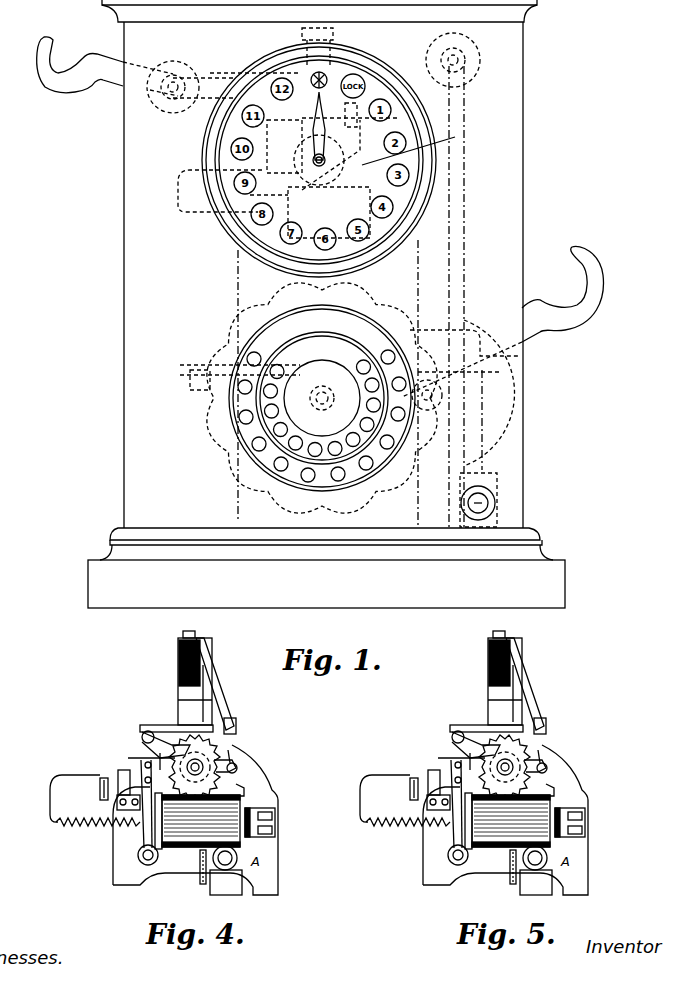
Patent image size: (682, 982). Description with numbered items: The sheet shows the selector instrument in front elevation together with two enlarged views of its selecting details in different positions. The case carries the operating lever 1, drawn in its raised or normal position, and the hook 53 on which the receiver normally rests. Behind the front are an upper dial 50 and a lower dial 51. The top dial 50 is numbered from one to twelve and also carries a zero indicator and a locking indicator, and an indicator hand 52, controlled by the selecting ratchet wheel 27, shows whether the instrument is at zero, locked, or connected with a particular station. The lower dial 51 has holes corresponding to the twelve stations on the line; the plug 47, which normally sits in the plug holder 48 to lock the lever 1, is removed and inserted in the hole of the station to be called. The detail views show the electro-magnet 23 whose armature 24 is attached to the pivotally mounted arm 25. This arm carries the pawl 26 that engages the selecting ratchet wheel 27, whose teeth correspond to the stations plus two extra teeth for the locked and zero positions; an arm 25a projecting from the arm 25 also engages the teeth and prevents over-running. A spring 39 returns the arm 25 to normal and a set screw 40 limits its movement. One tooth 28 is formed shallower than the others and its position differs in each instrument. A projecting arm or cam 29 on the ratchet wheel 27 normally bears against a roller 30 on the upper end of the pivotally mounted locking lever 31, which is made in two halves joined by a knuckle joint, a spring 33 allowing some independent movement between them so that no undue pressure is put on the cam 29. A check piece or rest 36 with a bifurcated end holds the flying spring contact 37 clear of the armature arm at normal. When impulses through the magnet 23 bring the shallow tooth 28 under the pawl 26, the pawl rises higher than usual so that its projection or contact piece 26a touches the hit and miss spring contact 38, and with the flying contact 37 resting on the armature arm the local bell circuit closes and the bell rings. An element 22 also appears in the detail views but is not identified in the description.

In FIG. 1, the lever 1 is at (502, 321).
In FIG. 1, the hook 53 is at (80, 65).
In FIG. 1, the upper dial 50 is at (415, 147).
In FIG. 1, the indicator hand 52 is at (335, 119).
In FIG. 1, the lower dial 51 is at (350, 360).
In FIG. 1, the plug 47 is at (486, 500).
In FIG. 1, the plug holder 48 is at (463, 517).
In FIG. 4, the screws 22 is at (156, 772).
In FIG. 5, the screws 22 is at (466, 772).
In FIG. 4, the electro-magnet 23 is at (215, 821).
In FIG. 5, the electro-magnet 23 is at (525, 821).
In FIG. 4, the armature 24 is at (159, 852).
In FIG. 5, the armature 24 is at (469, 855).
In FIG. 4, the pivotally mounted arm 25 is at (148, 837).
In FIG. 5, the pivotally mounted arm 25 is at (444, 804).
In FIG. 4, the arm 25a is at (153, 758).
In FIG. 5, the arm 25a is at (455, 758).
In FIG. 4, the pawl 26 is at (147, 742).
In FIG. 5, the pawl 26 is at (464, 744).
In FIG. 4, the projection or contact piece 26a is at (150, 725).
In FIG. 5, the projection or contact piece 26a is at (476, 717).
In FIG. 4, the selecting ratchet wheel 27 is at (194, 767).
In FIG. 5, the selecting ratchet wheel 27 is at (504, 767).
In FIG. 4, the shallow tooth 28 is at (207, 725).
In FIG. 5, the shallow tooth 28 is at (495, 742).
In FIG. 4, the projecting arm or cam 29 is at (218, 782).
In FIG. 5, the projecting arm or cam 29 is at (513, 756).
In FIG. 4, the roller 30 is at (233, 749).
In FIG. 5, the roller 30 is at (543, 749).
In FIG. 4, the locking arm or lever 31 is at (244, 790).
In FIG. 5, the locking arm or lever 31 is at (561, 787).
In FIG. 4, the spring 33 is at (205, 862).
In FIG. 5, the spring 33 is at (521, 870).
In FIG. 4, the check piece or rest 36 is at (215, 707).
In FIG. 5, the check piece or rest 36 is at (534, 684).
In FIG. 4, the flying spring contact 37 is at (234, 727).
In FIG. 5, the flying spring contact 37 is at (550, 725).
In FIG. 4, the hit and miss contact 38 is at (177, 705).
In FIG. 5, the hit and miss contact 38 is at (490, 678).
In FIG. 4, the spring 39 is at (98, 815).
In FIG. 5, the spring 39 is at (408, 815).
In FIG. 4, the set screw 40 is at (102, 778).
In FIG. 5, the set screw 40 is at (405, 789).